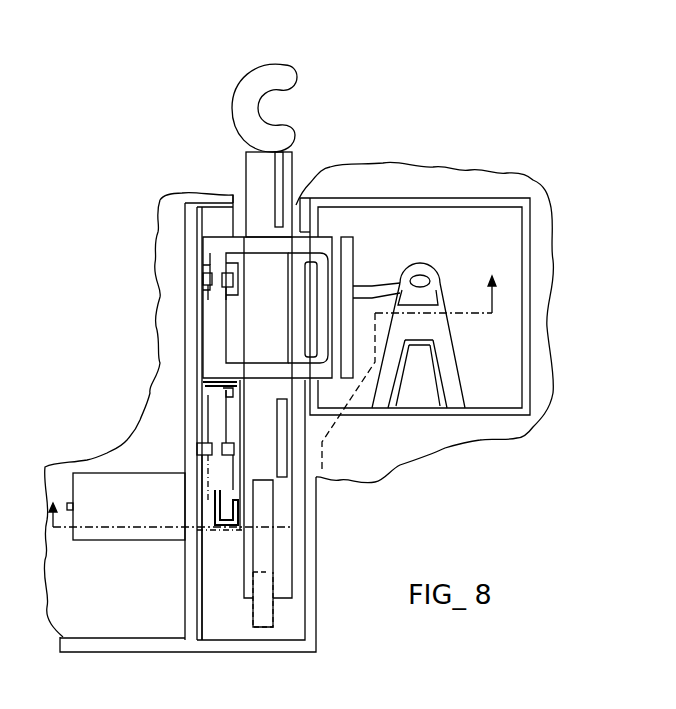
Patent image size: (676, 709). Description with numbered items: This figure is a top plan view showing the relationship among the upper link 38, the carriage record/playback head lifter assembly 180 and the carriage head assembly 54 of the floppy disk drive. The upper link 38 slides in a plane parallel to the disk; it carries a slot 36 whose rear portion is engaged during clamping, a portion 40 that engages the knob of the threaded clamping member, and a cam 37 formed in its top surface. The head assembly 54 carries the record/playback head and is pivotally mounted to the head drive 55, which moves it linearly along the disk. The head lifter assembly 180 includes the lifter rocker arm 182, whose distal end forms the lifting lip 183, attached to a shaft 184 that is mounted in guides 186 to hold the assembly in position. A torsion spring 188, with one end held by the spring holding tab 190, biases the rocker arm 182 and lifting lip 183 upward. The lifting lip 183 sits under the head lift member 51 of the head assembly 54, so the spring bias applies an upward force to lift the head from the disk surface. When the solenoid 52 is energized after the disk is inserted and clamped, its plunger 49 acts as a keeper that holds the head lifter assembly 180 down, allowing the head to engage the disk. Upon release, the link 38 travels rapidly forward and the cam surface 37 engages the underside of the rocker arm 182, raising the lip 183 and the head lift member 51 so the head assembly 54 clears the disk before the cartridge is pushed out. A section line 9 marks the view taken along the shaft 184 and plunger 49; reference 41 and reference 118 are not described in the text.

The section line 9- 9 is at (276, 393).
The slot 36 is at (308, 553).
The cam 37 is at (285, 455).
The upper link 38 is at (278, 500).
The portion of link 40 is at (245, 150).
The hook opening 41 is at (300, 110).
The solenoid plunger 49 is at (237, 525).
The head lift member 51 is at (372, 290).
The solenoid 52 is at (103, 541).
The head assembly 54 is at (426, 342).
The head drive 55 is at (426, 404).
The lower rod portion 118 is at (262, 615).
The head lifter assembly 180 is at (140, 235).
The lifter rocker arm 182 is at (336, 230).
The lifting lip 183 is at (347, 237).
The shaft 184 is at (203, 328).
The guides 186 is at (198, 278).
The torsion spring 188 is at (235, 385).
The spring holding tab 190 is at (230, 393).